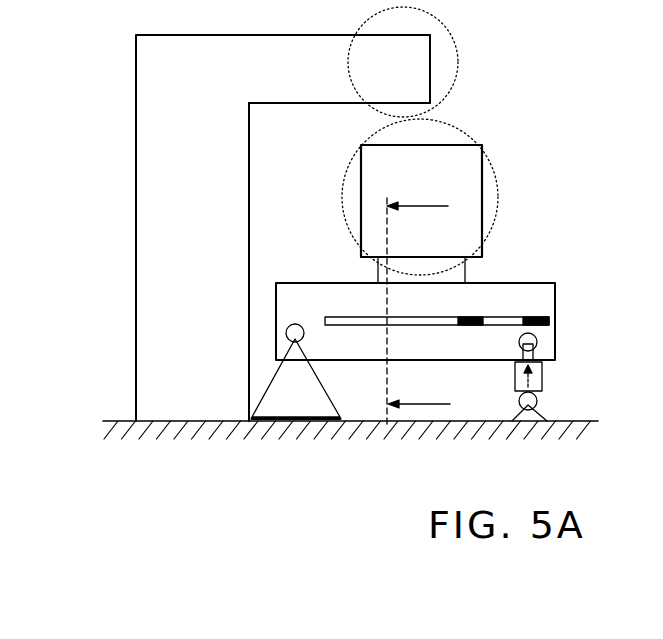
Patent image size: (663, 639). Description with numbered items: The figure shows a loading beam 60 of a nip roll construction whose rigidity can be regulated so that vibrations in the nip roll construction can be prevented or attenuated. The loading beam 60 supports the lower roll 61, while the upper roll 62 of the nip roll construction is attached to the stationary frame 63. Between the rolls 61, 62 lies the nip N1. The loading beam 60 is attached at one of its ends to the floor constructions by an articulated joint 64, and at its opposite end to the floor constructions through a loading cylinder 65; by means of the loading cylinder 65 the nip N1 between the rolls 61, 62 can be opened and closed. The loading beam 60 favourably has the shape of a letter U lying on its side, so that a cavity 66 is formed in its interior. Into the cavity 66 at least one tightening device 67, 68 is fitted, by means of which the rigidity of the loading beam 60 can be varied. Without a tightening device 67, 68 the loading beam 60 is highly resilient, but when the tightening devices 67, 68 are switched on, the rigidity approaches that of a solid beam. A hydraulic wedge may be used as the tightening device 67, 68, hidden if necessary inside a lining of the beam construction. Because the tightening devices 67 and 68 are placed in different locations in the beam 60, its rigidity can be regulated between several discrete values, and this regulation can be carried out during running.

The loading beam 60 is at (288, 303).
The lower roll 61 is at (488, 177).
The upper roll 62 is at (445, 65).
The stationary frame 63 is at (145, 63).
The articulated joint 64 is at (286, 335).
The loading cylinder 65 is at (540, 378).
The cavity 66 is at (366, 326).
The tightening device 67 is at (472, 313).
The tightening device 68 is at (540, 313).
The nip N1 is at (437, 113).